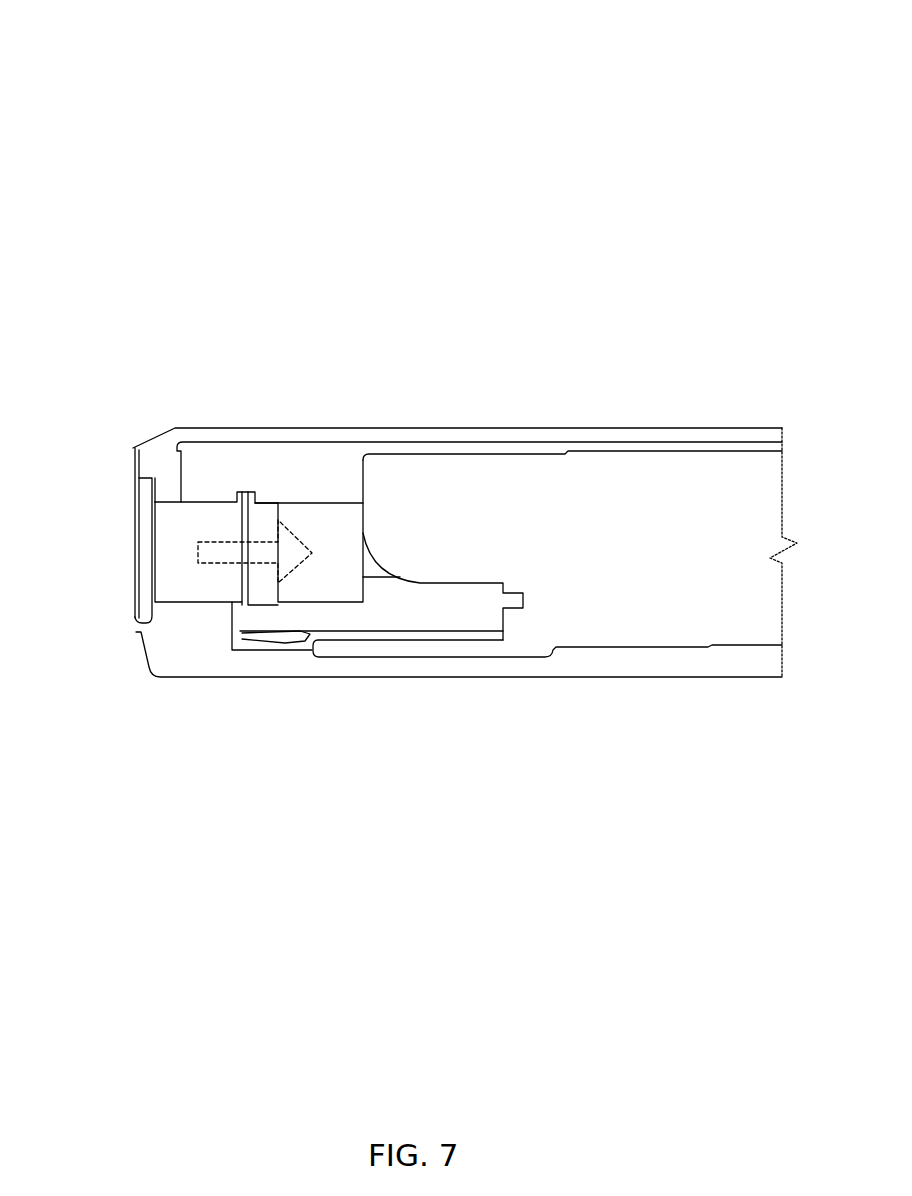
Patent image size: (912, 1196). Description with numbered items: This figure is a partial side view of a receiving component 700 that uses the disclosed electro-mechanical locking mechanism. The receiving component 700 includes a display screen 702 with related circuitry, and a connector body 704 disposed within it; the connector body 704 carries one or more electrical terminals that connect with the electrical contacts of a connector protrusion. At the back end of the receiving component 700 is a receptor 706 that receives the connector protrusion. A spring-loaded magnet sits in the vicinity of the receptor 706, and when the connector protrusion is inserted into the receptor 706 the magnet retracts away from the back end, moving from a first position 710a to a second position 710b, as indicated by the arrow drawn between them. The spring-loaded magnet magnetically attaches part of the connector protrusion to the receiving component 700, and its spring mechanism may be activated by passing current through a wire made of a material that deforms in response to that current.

The receiving component 700 is at (165, 83).
The display screen 702 is at (637, 523).
The connector body 704 is at (450, 626).
The receptor 706 is at (135, 549).
The position of spring-loaded magnet 710a is at (216, 520).
The position of spring-loaded magnet 710b is at (331, 519).